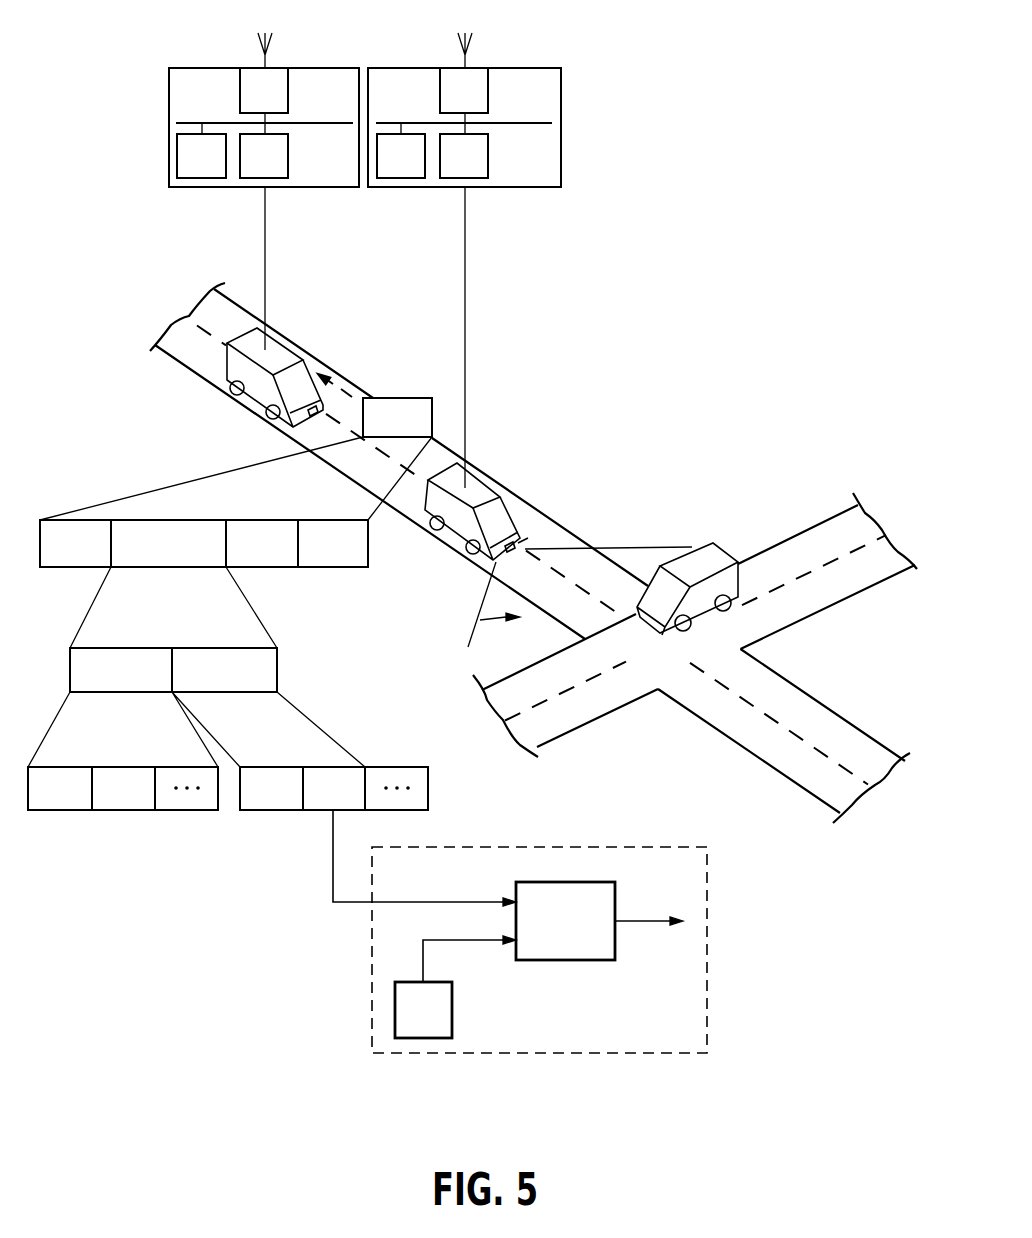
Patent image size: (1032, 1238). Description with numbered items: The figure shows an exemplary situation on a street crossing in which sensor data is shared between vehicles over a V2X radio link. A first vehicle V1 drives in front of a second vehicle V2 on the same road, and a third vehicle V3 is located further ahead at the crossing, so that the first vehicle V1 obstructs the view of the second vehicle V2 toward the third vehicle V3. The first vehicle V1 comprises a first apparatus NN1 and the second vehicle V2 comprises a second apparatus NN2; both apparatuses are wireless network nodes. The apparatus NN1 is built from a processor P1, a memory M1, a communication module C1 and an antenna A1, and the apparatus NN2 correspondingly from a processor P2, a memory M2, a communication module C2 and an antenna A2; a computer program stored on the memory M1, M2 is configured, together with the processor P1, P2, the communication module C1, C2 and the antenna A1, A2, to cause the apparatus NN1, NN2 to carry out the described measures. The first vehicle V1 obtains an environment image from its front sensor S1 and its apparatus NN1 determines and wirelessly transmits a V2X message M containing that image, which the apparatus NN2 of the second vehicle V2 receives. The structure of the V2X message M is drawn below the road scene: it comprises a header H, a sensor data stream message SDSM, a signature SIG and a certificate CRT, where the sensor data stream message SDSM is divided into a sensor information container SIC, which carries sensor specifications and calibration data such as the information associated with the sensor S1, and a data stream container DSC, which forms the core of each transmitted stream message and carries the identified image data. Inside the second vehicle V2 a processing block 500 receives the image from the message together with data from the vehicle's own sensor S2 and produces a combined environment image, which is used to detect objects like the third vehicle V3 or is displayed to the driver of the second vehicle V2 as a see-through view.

The antenna A1 is at (464, 107).
The antenna A2 is at (264, 107).
The first apparatus NN1 is at (433, 107).
The communication module C1 is at (482, 107).
The memory M1 is at (418, 173).
The processor P1 is at (480, 173).
The second apparatus NN2 is at (228, 107).
The communication module C2 is at (282, 107).
The memory M2 is at (220, 173).
The processor P2 is at (282, 173).
The V2X message M is at (408, 433).
The first vehicle V1 is at (478, 490).
The second vehicle V2 is at (233, 366).
The third vehicle V3 is at (718, 545).
The front sensor S1 is at (523, 546).
The sensor S2 is at (318, 412).
The header H is at (85, 560).
The sensor data stream message SDSM is at (203, 560).
The signature SIG is at (283, 560).
The certificate CRT is at (360, 560).
The sensor information container SIC is at (142, 687).
The data stream container DSC is at (250, 687).
The processing unit 500 is at (587, 938).